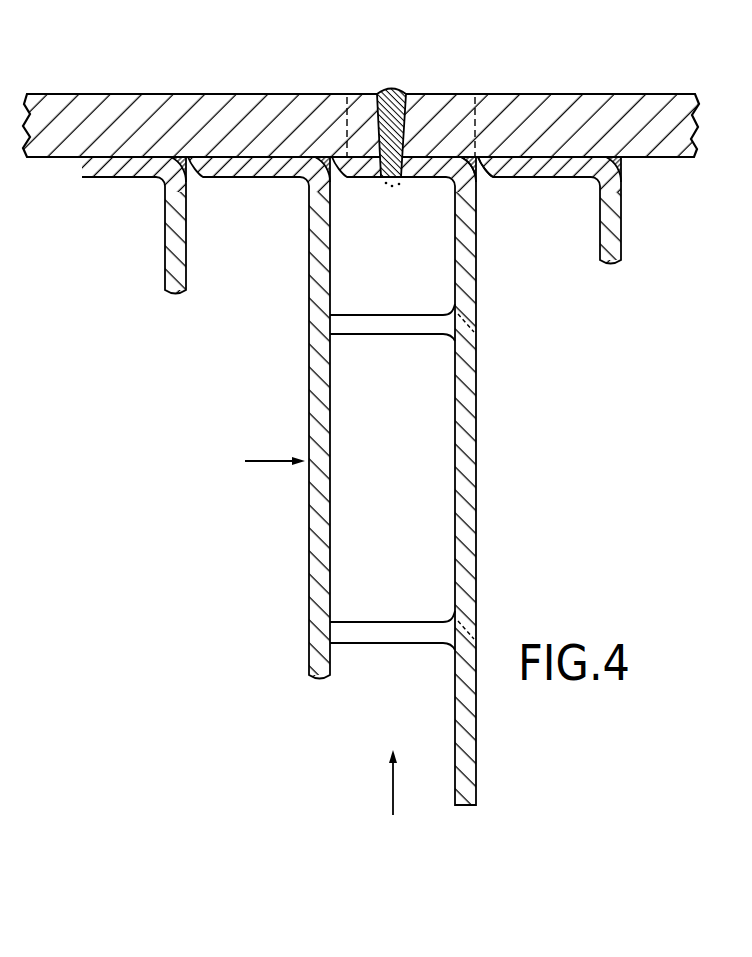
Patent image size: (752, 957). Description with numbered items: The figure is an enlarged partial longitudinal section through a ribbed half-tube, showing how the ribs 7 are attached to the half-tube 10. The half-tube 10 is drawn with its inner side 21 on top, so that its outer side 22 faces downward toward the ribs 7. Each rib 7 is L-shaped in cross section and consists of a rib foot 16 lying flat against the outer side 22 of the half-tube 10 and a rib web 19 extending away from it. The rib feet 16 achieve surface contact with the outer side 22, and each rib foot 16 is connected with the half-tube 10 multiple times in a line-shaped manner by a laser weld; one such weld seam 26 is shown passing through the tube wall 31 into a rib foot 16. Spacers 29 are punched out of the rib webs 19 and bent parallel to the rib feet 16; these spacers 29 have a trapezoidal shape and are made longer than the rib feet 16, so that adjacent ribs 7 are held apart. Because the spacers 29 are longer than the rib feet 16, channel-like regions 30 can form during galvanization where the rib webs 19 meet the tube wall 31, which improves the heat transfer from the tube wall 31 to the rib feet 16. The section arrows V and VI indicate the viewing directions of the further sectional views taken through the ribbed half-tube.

The half-tube 10 is at (268, 82).
The tube wall 31 is at (167, 94).
The inner side 21 is at (529, 91).
The weld seam 26 is at (397, 92).
The rib foot 16 is at (398, 481).
The outer side 22 is at (663, 160).
The channel-like region 30 is at (478, 162).
The rib 7 is at (399, 498).
The rib web 19 is at (467, 410).
The spacer 29 is at (388, 328).
The section arrow VI is at (258, 460).
The section arrow V is at (392, 805).